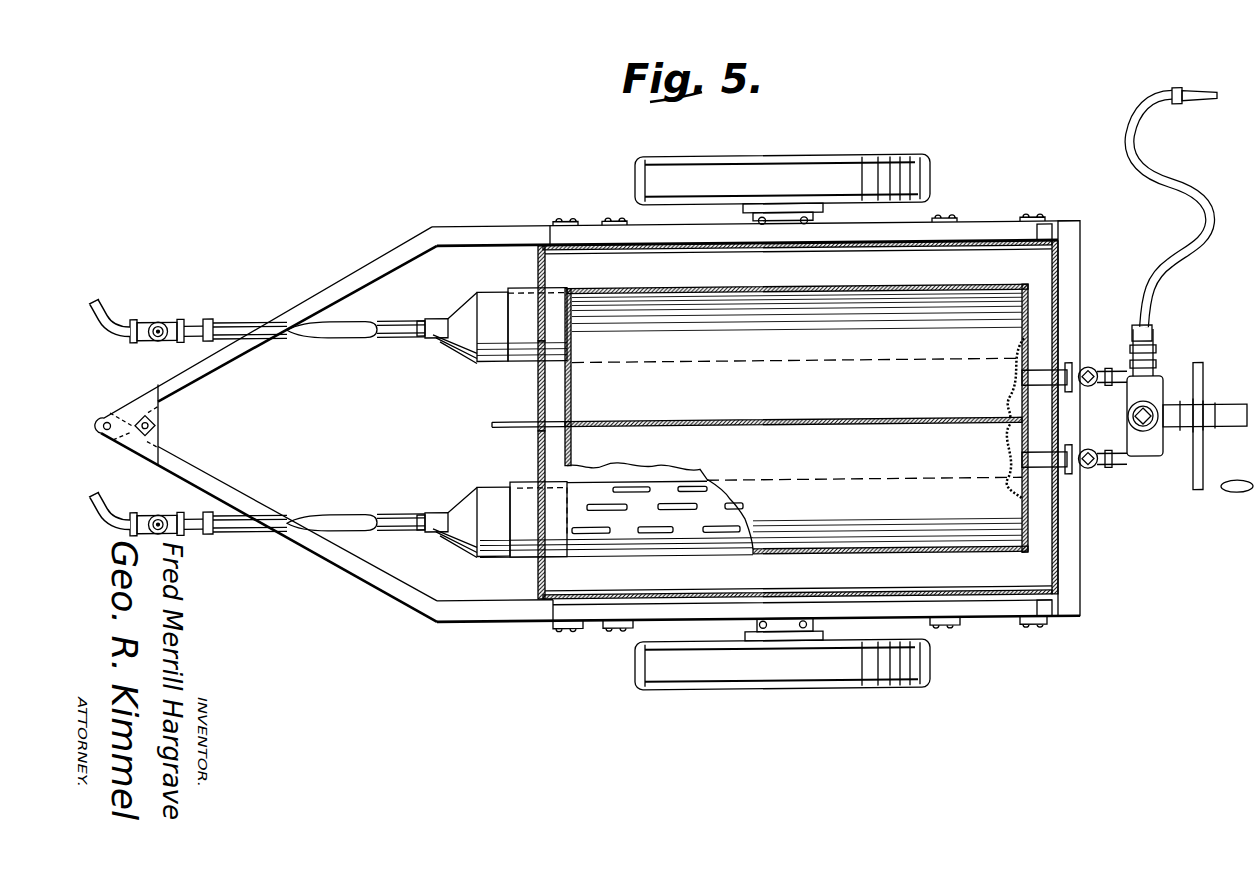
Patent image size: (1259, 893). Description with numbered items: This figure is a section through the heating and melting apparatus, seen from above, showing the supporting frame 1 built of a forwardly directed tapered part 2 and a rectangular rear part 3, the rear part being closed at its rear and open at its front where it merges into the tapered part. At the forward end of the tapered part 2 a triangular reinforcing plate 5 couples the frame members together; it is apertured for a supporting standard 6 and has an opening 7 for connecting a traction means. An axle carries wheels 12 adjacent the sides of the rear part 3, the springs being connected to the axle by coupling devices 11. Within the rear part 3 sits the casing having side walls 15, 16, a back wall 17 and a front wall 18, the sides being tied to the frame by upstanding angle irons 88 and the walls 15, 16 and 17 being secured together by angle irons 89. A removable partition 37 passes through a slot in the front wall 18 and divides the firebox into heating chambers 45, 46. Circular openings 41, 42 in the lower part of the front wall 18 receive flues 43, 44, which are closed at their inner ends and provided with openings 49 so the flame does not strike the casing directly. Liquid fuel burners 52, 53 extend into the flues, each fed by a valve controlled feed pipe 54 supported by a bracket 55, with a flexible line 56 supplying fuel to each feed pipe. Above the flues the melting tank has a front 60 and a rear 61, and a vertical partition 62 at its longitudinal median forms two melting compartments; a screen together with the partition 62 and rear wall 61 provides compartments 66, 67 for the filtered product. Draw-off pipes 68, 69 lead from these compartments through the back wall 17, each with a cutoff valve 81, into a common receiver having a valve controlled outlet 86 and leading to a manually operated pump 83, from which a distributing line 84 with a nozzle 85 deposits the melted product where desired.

The supporting frame 1 is at (492, 214).
The tapered frame part 2 is at (328, 280).
The rectangular rear frame part 3 is at (650, 226).
The triangular reinforcing plate 5 is at (137, 402).
The supporting standard 6 is at (157, 421).
The opening 7 is at (103, 418).
The coupling devices 11 is at (824, 208).
The wheels 12 is at (809, 170).
The side wall 15 is at (953, 244).
The side wall 16 is at (978, 600).
The back wall 17 is at (1060, 308).
The front wall 18 is at (537, 383).
The removable partition 37 is at (558, 430).
The circular opening 41 is at (548, 284).
The circular opening 42 is at (538, 475).
The flue 43 is at (522, 325).
The flue 44 is at (746, 535).
The heating chamber 45 is at (798, 264).
The heating chamber 46 is at (683, 508).
The openings 49 is at (658, 531).
The liquid fuel burner 52 is at (460, 303).
The liquid fuel burner 53 is at (462, 498).
The valve controlled feed pipe 54 is at (188, 320).
The bracket 55 is at (337, 335).
The flexible line 56 is at (107, 312).
The front of tank 60 is at (572, 392).
The rear wall of tank 61 is at (1028, 344).
The vertical partition 62 is at (746, 421).
The compartment 66 is at (1010, 398).
The compartment 67 is at (1010, 440).
The draw-off pipe 68 is at (1040, 376).
The draw-off pipe 69 is at (1060, 455).
The cutoff valve 81 is at (1091, 372).
The manually operated pump 83 is at (1150, 388).
The distributing line 84 is at (1176, 185).
The nozzle 85 is at (1198, 99).
The valve controlled outlet 86 is at (1205, 386).
The upstanding angle irons 88 is at (598, 608).
The angle irons 89 is at (1050, 621).